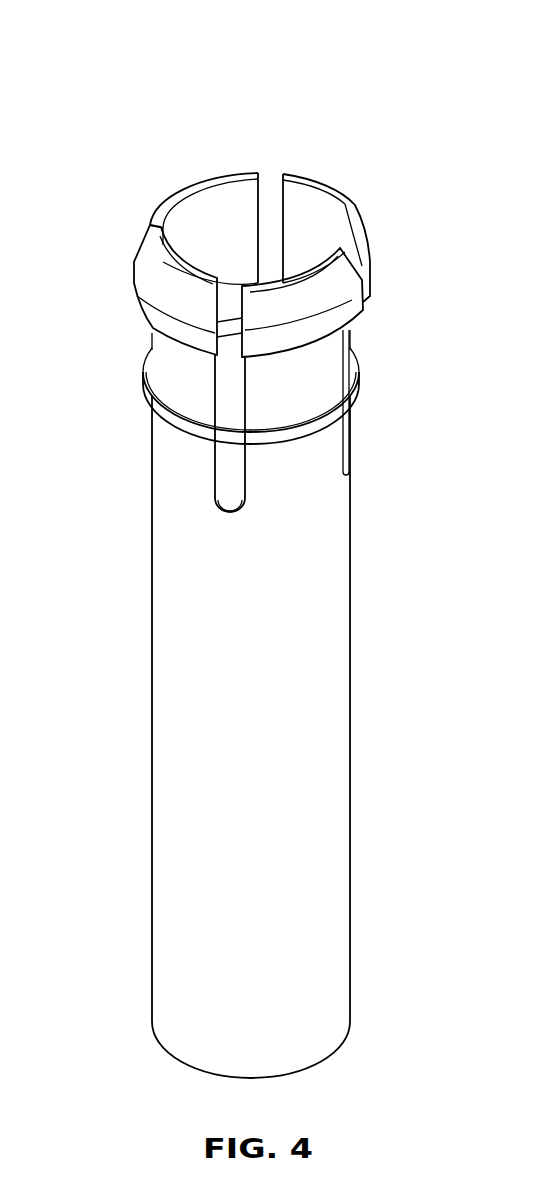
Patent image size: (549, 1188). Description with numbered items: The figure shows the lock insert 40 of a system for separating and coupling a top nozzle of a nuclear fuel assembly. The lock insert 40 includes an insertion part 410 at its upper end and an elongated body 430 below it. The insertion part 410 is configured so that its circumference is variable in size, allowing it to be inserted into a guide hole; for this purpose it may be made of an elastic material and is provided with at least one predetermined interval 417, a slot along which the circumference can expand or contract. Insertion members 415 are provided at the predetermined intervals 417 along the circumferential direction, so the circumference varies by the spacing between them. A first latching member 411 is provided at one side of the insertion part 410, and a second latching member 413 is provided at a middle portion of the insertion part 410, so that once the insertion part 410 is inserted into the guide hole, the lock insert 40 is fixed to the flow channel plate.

The lock insert 40 is at (386, 158).
The insertion part 410 is at (404, 463).
The first latching member 411 is at (148, 283).
The second latching member 413 is at (145, 397).
The insertion member 415 is at (162, 345).
The predetermined interval 417 is at (230, 377).
The body 430 is at (406, 1039).